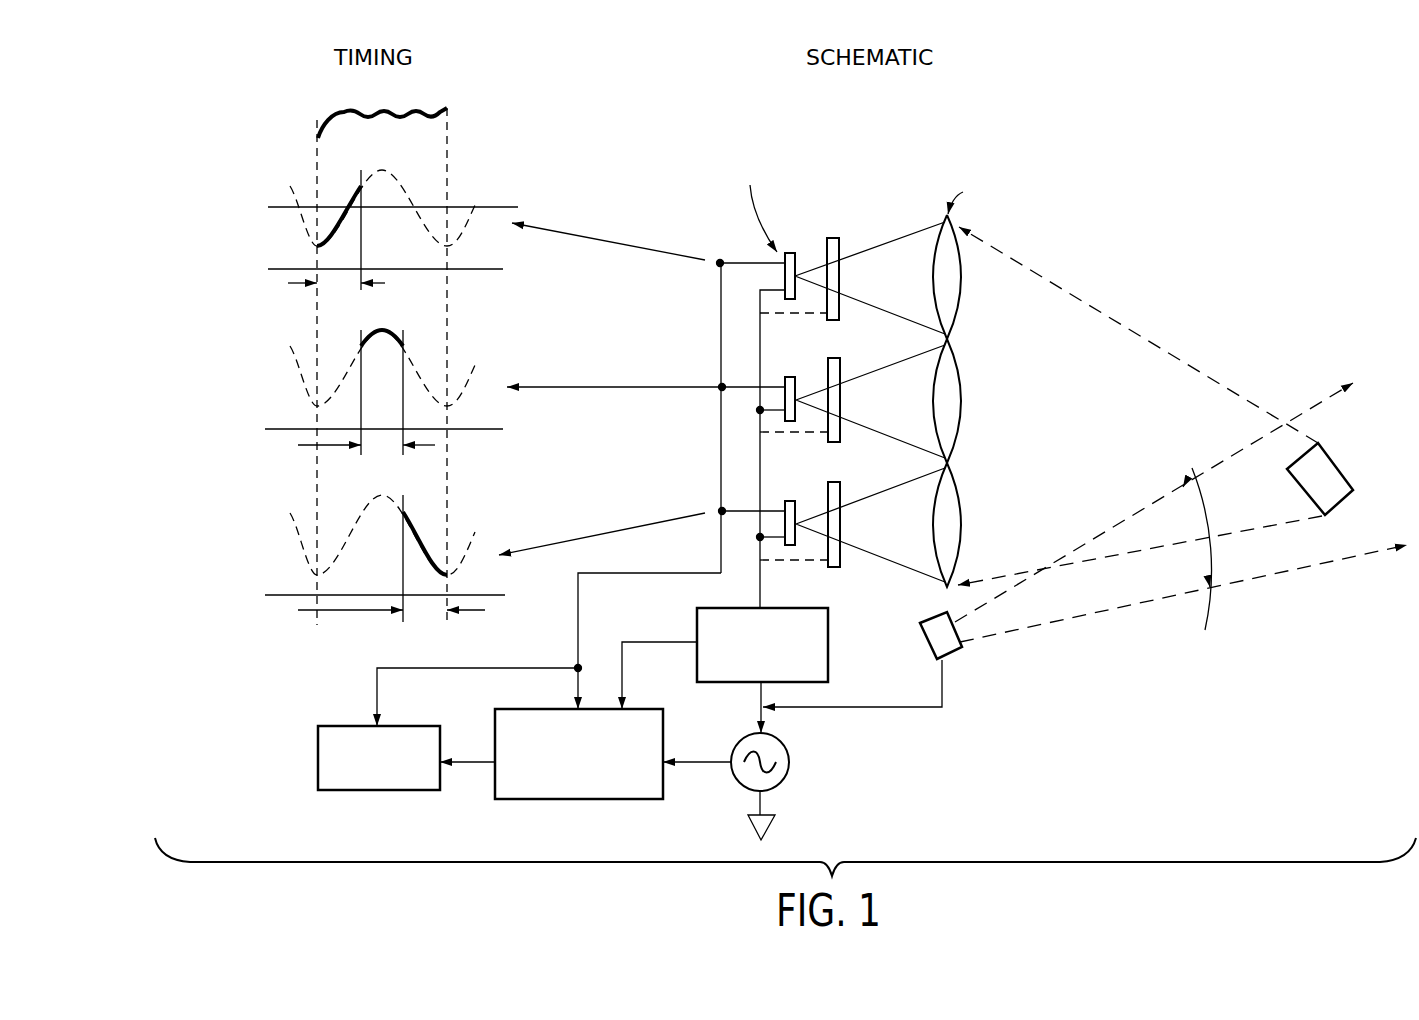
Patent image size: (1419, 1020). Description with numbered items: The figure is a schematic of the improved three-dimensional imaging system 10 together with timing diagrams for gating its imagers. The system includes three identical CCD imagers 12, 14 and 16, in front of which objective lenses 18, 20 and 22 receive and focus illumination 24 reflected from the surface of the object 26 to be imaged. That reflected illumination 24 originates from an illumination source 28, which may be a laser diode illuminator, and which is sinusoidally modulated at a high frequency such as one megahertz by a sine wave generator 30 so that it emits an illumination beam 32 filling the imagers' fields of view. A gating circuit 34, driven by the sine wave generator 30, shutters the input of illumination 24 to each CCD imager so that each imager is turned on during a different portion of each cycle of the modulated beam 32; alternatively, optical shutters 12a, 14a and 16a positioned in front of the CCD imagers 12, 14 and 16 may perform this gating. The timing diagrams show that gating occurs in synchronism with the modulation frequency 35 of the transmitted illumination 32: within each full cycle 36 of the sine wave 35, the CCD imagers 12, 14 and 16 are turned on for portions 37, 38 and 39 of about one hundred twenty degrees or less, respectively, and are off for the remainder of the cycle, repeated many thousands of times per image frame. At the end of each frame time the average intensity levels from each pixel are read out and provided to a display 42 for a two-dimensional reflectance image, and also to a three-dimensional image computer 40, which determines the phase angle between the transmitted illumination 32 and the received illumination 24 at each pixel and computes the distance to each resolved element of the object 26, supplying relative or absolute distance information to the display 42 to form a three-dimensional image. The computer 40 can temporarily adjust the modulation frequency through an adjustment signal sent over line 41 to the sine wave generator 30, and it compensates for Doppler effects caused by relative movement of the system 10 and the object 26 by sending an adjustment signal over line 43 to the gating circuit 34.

The three-dimensional imaging system 10 is at (1222, 140).
The CCD imager 12 is at (785, 251).
The optical shutter 12a is at (833, 237).
The CCD imager 14 is at (788, 376).
The optical shutter 14a is at (833, 358).
The CCD imager 16 is at (790, 500).
The optical shutter 16a is at (833, 482).
The objective lens 18 is at (958, 297).
The objective lens 20 is at (962, 400).
The objective lens 22 is at (963, 505).
The illumination 24 is at (1147, 335).
The object 26 is at (1341, 466).
The illumination source 28 is at (921, 640).
The sine wave generator 30 is at (791, 757).
The illumination beam 32 is at (1275, 578).
The gating circuit 34 is at (828, 612).
The modulation frequency 35 is at (290, 218).
The full cycle 36 is at (343, 123).
The portion 37 is at (347, 197).
The portion 38 is at (381, 330).
The portion 39 is at (420, 525).
The three-dimensional image computer 40 is at (597, 800).
The line 41 is at (704, 765).
The display 42 is at (412, 792).
The line 43 is at (645, 646).